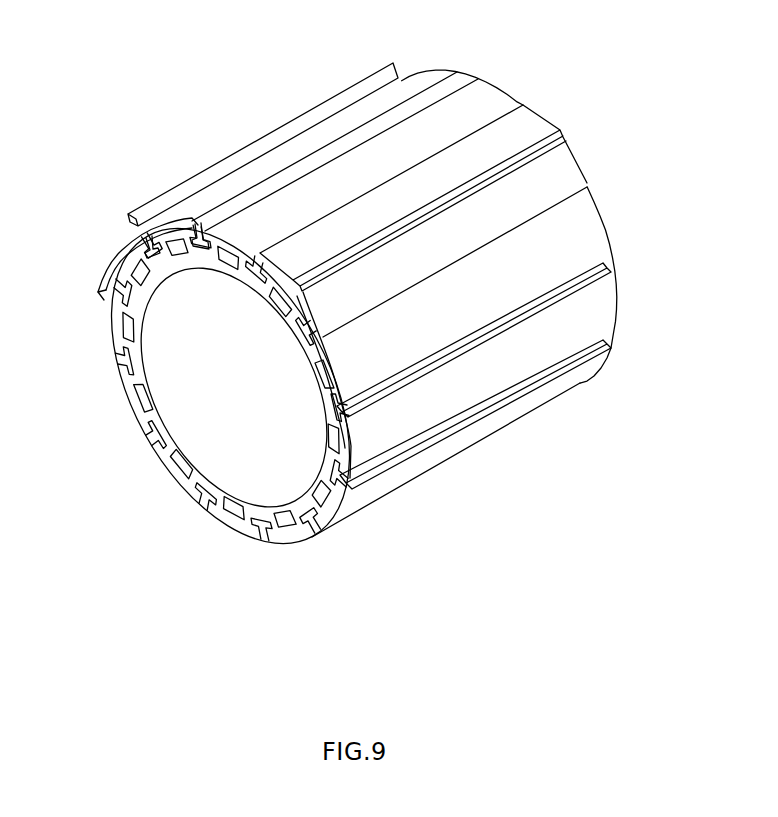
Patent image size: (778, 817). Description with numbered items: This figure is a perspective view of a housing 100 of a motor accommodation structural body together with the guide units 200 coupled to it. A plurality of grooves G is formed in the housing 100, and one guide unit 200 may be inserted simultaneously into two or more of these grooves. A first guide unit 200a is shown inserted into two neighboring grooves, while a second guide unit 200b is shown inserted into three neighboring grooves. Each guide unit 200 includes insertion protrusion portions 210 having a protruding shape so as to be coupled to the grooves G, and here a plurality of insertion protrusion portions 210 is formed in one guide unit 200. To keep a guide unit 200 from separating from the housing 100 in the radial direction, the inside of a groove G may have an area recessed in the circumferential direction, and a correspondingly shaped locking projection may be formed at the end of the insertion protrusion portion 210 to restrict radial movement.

The housing 100 is at (220, 386).
The insertion protrusion portion 210 is at (131, 297).
The groove G is at (95, 369).
The guide unit 200 is at (387, 296).
The first guide unit 200a is at (530, 123).
The second guide unit 200b is at (345, 97).